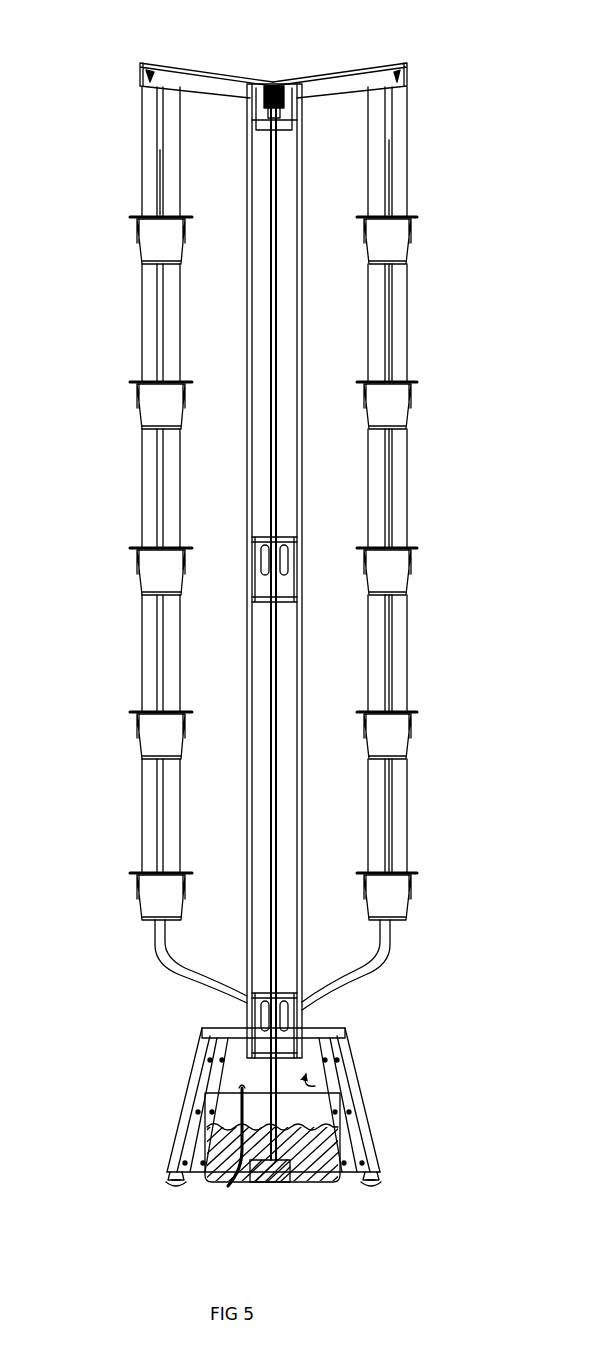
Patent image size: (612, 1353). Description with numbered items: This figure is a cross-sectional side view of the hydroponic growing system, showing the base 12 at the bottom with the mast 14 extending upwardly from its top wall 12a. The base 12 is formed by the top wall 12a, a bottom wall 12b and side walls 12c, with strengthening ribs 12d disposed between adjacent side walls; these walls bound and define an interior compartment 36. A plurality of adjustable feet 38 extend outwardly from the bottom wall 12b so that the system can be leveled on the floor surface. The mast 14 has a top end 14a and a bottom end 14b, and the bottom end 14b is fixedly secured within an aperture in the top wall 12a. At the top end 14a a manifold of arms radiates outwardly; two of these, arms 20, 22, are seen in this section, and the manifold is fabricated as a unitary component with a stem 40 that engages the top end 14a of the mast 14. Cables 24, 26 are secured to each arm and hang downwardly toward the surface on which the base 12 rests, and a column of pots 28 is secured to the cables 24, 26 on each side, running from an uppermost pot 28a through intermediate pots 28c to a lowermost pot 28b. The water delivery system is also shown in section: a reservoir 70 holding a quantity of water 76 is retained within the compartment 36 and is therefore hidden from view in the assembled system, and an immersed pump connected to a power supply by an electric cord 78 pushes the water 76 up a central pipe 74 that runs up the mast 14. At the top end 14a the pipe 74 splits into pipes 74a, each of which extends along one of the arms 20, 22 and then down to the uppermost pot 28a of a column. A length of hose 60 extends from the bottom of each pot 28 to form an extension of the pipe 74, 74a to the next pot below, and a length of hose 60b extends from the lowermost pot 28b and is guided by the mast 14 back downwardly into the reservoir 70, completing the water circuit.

The base 12 is at (281, 1117).
The top wall 12a is at (325, 1032).
The bottom wall 12b is at (352, 1184).
The side walls 12c is at (232, 1072).
The strengthening ribs 12d is at (200, 1120).
The mast 14 is at (308, 589).
The top end 14a is at (282, 148).
The bottom end 14b is at (260, 1050).
The arm 20 is at (190, 78).
The arm 22 is at (360, 82).
The cable 24 is at (366, 292).
The cable 26 is at (410, 322).
The pots 28 is at (165, 573).
The uppermost pot 28a is at (160, 232).
The lowermost pot 28b is at (170, 890).
The plant cup 28c is at (400, 402).
The interior compartment 36 is at (320, 1080).
The feet 38 is at (178, 1182).
The stem 40 is at (262, 117).
The hose 60 is at (392, 512).
The hose 60b is at (168, 962).
The reservoir 70 is at (320, 1142).
The central pipe 74 is at (278, 184).
The pipe 74a is at (160, 147).
The water 76 is at (232, 1178).
The electric cord 78 is at (238, 1110).